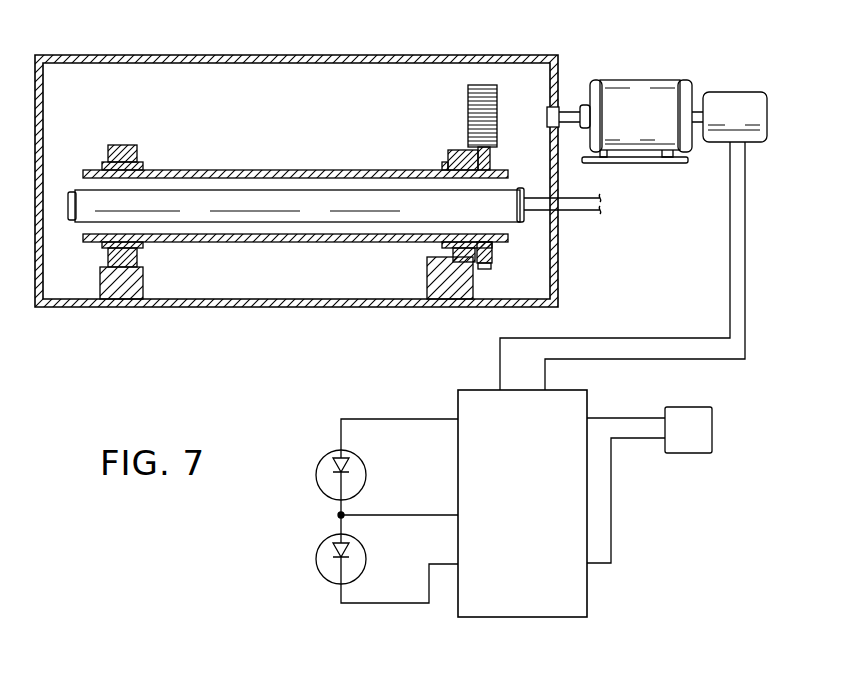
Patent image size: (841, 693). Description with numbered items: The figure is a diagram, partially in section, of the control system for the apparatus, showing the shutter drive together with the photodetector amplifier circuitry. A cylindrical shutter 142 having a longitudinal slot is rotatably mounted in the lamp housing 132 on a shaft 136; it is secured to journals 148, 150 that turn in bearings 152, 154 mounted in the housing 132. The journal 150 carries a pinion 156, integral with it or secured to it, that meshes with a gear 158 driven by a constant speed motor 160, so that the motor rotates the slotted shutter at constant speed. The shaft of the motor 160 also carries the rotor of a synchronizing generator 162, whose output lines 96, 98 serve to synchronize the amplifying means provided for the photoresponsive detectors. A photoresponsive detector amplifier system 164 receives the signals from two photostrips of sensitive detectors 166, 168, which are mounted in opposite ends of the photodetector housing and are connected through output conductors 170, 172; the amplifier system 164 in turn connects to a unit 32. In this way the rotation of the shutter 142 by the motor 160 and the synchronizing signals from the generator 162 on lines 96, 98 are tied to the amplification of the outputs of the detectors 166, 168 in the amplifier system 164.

The control unit 32 is at (700, 433).
The output line 96 is at (730, 238).
The output line 98 is at (745, 210).
The lamp housing 132 is at (178, 303).
The shaft 136 is at (238, 212).
The shutter 142 is at (280, 172).
The journal 148 is at (143, 243).
The journal 150 is at (443, 163).
The bearing 152 is at (123, 145).
The bearing 154 is at (450, 248).
The pinion 156 is at (490, 258).
The gear 158 is at (480, 87).
The constant speed motor 160 is at (640, 85).
The synchronizing generator 162 is at (737, 95).
The photoresponsive detector amplifier system 164 is at (512, 617).
The photostrip of sensitive detectors 166 is at (322, 570).
The photostrip of sensitive detectors 168 is at (320, 479).
The output conductor 170 is at (620, 418).
The output conductor 172 is at (611, 493).